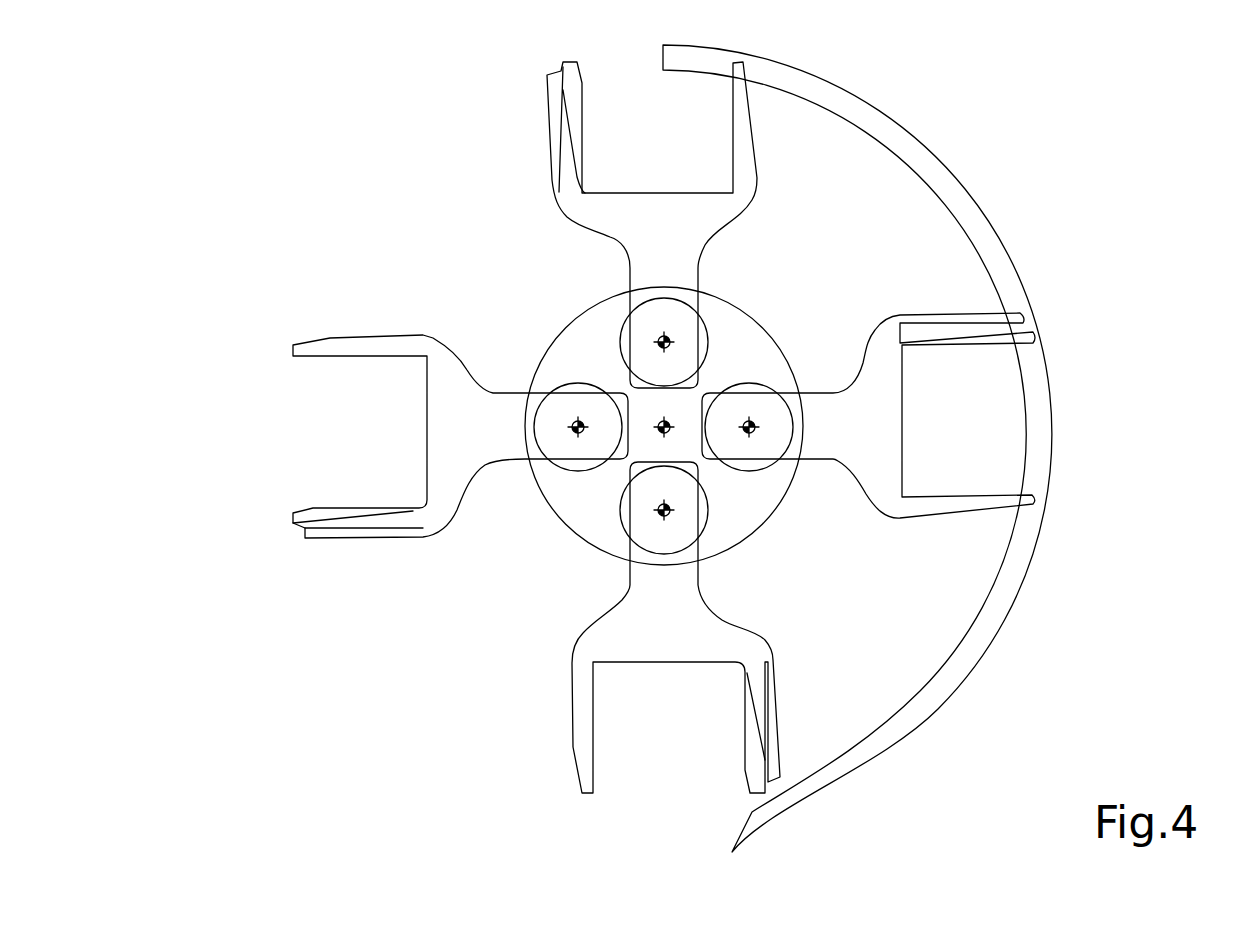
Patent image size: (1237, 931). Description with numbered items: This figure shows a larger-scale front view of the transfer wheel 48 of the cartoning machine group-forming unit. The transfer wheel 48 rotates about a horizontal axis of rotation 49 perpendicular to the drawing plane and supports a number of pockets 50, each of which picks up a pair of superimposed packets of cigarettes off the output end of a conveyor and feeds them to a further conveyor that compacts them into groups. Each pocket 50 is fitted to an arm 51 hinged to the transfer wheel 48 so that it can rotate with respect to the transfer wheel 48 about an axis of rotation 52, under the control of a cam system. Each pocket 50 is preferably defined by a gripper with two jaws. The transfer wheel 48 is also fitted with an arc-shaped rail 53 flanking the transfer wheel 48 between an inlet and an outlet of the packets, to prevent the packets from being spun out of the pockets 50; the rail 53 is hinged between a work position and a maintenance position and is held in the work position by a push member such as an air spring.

The transfer wheel 48 is at (284, 239).
The axis of rotation 49 is at (660, 420).
The pocket 50 is at (963, 424).
The arm 51 is at (835, 450).
The axis of rotation 52 is at (752, 423).
The arc-shaped rail 53 is at (987, 625).